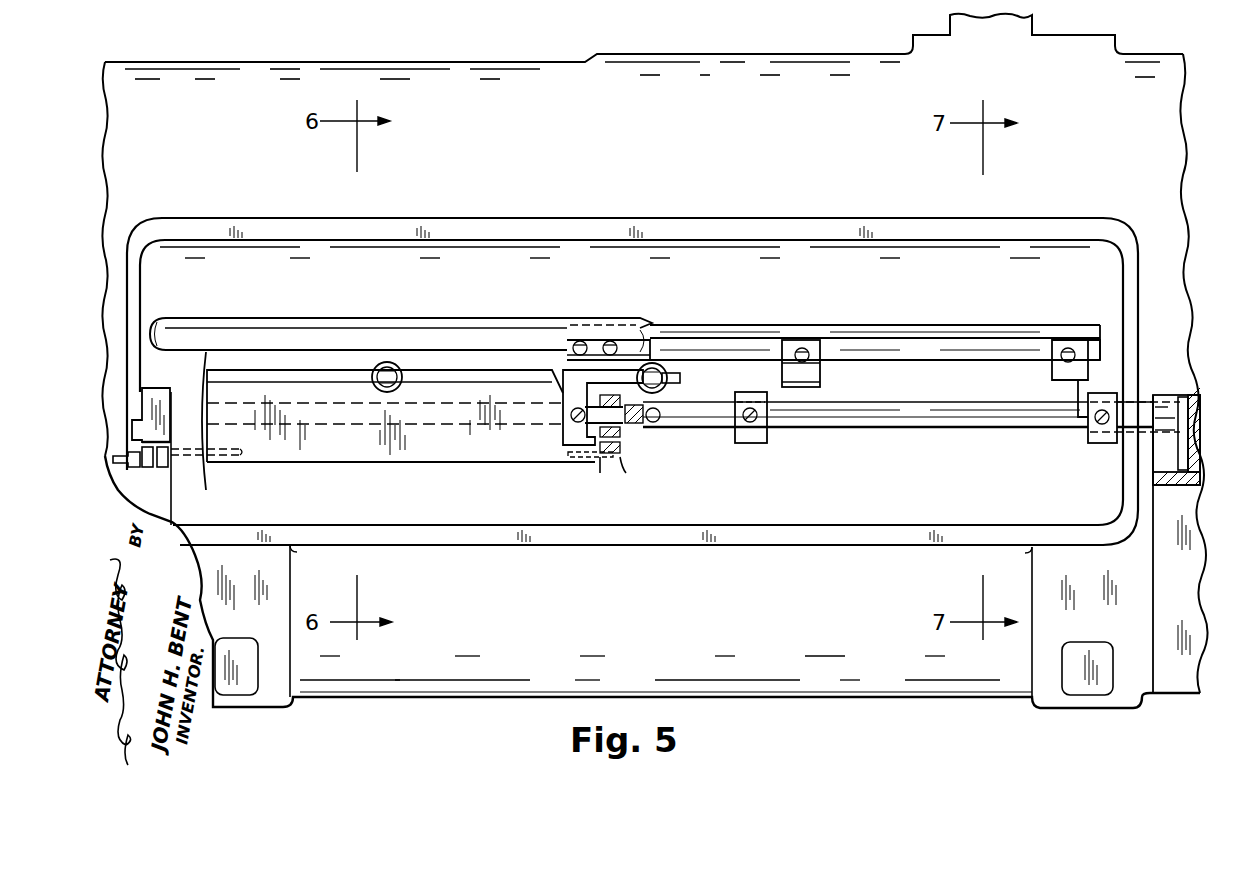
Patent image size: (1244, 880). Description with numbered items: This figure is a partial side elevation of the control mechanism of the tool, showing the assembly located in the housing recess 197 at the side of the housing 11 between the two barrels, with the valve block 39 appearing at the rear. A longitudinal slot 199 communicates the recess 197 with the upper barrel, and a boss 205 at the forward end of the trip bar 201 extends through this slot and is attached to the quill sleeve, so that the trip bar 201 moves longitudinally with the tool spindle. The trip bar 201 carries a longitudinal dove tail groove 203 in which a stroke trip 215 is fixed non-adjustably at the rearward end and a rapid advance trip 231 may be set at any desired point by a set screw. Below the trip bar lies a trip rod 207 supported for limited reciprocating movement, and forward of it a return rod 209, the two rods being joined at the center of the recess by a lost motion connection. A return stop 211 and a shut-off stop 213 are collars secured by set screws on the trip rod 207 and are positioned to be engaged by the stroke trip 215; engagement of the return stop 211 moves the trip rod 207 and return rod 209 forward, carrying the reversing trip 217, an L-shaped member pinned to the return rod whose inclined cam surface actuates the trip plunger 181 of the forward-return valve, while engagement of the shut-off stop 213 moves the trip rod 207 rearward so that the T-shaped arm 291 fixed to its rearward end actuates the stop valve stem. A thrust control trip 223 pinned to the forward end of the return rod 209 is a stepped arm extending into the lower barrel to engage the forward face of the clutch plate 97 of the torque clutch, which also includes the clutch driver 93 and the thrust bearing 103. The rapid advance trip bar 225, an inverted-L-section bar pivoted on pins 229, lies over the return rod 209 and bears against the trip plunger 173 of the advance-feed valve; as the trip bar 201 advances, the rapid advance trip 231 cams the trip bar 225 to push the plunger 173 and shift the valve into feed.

The housing 11 is at (662, 168).
The valve block 39 is at (1192, 603).
The clutch driver 93 is at (163, 468).
The clutch plate 97 is at (148, 468).
The thrust bearing 103 is at (112, 460).
The trip plunger 173 is at (392, 361).
The trip plunger 181 is at (662, 362).
The housing recess 197 is at (952, 508).
The longitudinal slot 199 is at (270, 322).
The trip bar 201 is at (890, 323).
The dove tail groove 203 is at (950, 344).
The boss 205 is at (600, 325).
The trip rod 207 is at (877, 420).
The return rod 209 is at (352, 418).
The return stop 211 is at (750, 445).
The shut-off stop 213 is at (1090, 436).
The stroke trip 215 is at (1058, 346).
The reversing trip 217 is at (682, 376).
The thrust control trip 223 is at (150, 418).
The rapid advance trip bar 225 is at (465, 444).
The pins 229 is at (207, 458).
The rapid advance trip 231 is at (790, 342).
The T-shaped arm 291 is at (1185, 448).